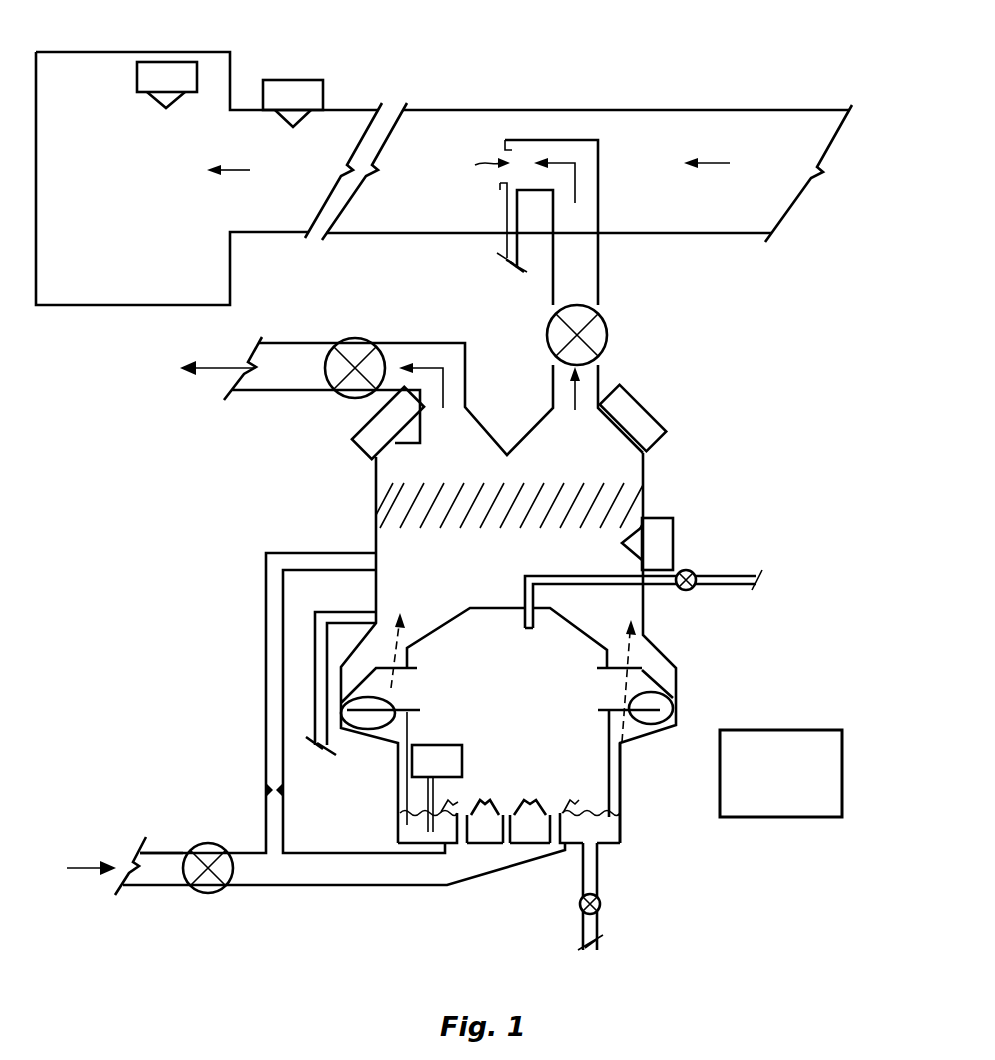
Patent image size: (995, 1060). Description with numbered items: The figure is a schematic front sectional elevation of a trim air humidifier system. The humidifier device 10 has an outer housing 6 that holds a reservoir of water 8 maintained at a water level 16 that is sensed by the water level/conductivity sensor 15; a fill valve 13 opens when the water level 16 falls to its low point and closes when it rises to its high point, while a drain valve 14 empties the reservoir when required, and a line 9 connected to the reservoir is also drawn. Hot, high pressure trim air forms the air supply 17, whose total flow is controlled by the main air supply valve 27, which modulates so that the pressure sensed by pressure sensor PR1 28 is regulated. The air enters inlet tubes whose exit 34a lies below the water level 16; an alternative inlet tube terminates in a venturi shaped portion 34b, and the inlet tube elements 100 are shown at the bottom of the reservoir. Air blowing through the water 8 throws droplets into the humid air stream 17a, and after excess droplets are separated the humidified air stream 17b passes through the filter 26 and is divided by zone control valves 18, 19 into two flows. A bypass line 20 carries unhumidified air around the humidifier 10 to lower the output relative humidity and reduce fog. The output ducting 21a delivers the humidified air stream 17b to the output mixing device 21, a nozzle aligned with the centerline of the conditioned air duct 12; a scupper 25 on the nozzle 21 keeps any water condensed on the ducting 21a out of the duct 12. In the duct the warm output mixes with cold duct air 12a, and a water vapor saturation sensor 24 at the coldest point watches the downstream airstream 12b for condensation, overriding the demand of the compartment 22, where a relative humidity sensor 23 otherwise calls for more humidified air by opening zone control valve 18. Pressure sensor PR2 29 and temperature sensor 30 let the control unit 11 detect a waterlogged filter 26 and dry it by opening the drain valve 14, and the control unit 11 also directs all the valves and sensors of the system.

The outer housing 6 is at (622, 757).
The water 8 is at (598, 822).
The water supply pipe 9 is at (315, 683).
The humidifier device 10 is at (680, 480).
The control unit 11 is at (770, 730).
The conditioned air duct 12 is at (598, 103).
The cold duct air 12a is at (730, 165).
The duct airstream 12b is at (254, 171).
The fill valve 13 is at (695, 592).
The drain valve 14 is at (580, 905).
The water level/conductivity sensor 15 is at (425, 745).
The water level 16 is at (592, 812).
The air supply 17 is at (86, 866).
The humid air stream 17a is at (342, 707).
The humidified air stream 17b is at (512, 450).
The zone control valve 18 is at (608, 333).
The zone control valve 19 is at (356, 338).
The bypass line 20 is at (266, 617).
The output mixing device 21 is at (475, 165).
The humidifier output ducting 21a is at (573, 138).
The compartment 22 is at (141, 248).
The relative humidity sensor 23 is at (165, 60).
The water vapor saturation sensor 24 is at (293, 80).
The scupper 25 is at (500, 187).
The filter 26 is at (410, 512).
The main air supply valve 27 is at (215, 893).
The pressure sensor PR1 28 is at (608, 440).
The pressure sensor PR2 29 is at (623, 550).
The temperature sensor 30 is at (362, 447).
The air inlet tube exit 34a is at (550, 830).
The venturi shaped portion 34b is at (568, 812).
The nozzles 100 is at (502, 798).